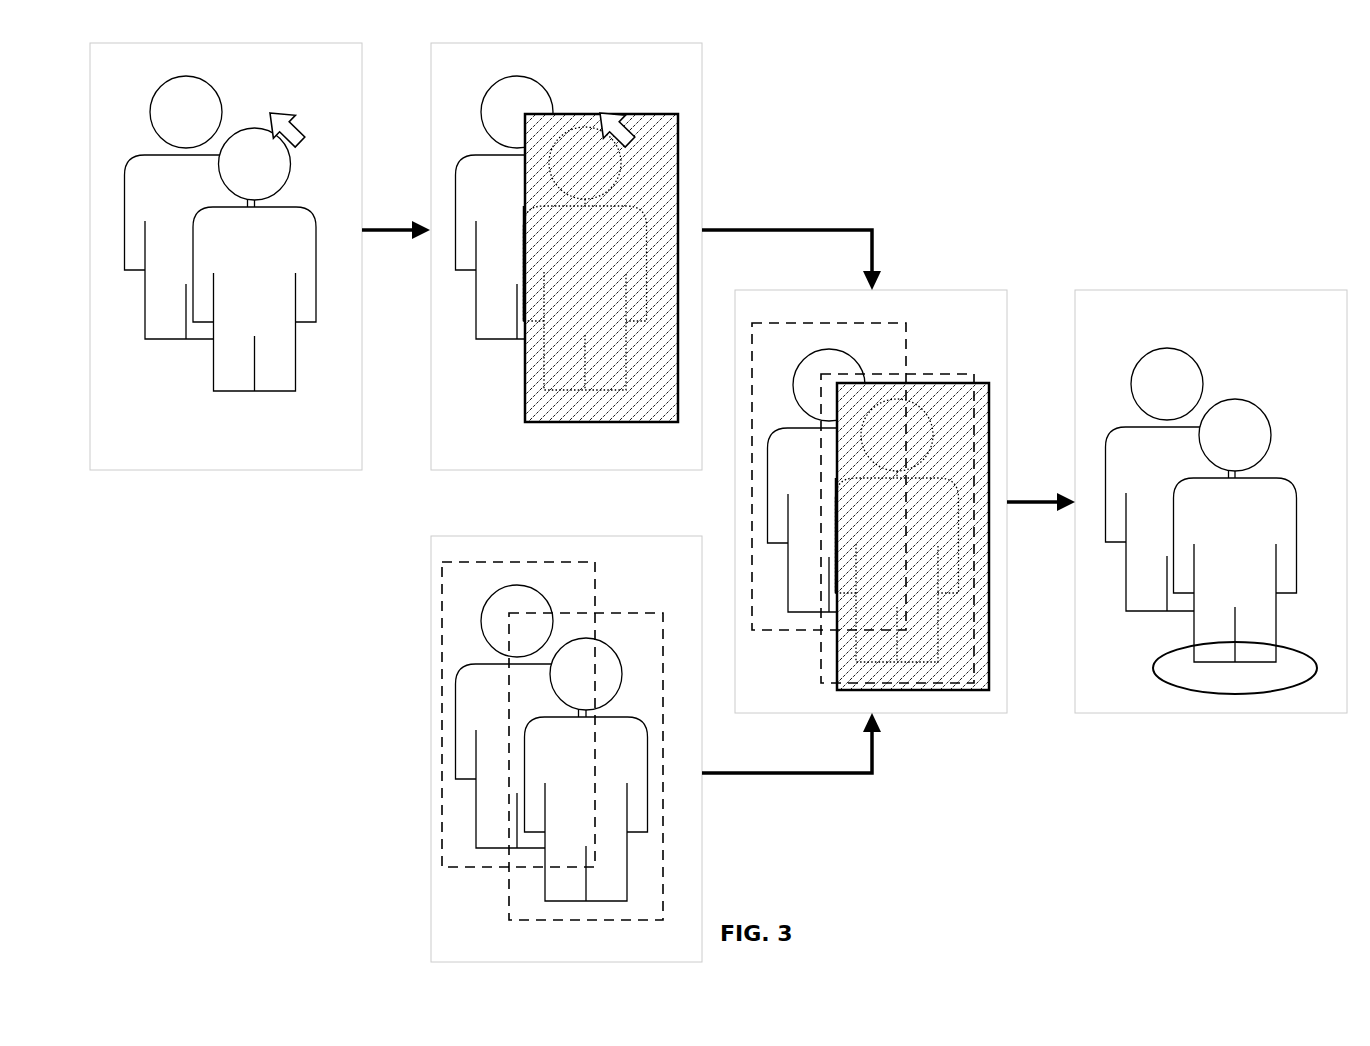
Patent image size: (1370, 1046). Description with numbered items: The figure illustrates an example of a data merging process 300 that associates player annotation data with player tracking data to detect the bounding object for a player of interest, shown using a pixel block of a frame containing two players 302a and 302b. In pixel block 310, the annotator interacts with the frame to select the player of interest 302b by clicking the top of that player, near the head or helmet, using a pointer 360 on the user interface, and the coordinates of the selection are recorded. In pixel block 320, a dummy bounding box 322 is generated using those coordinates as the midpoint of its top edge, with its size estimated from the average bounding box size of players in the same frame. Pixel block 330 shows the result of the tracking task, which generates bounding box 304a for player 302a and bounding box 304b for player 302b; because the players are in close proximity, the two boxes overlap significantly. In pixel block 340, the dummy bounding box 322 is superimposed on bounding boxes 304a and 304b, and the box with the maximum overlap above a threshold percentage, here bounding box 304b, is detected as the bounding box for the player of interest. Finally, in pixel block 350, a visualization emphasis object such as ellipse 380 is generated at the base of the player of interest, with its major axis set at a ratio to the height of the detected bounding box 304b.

The data merging process 300 is at (1282, 142).
The pixel block 310 is at (357, 72).
The pixel block 320 is at (696, 72).
The dummy bounding box 322 is at (552, 423).
The pixel block 330 is at (693, 566).
The pixel block 340 is at (1000, 318).
The pixel block 350 is at (1339, 320).
The player 302a is at (180, 193).
The player 302b is at (249, 246).
The bounding box 304a is at (499, 867).
The bounding box 304b is at (557, 920).
The pointer 360 is at (302, 125).
The ellipse 380 is at (1155, 667).